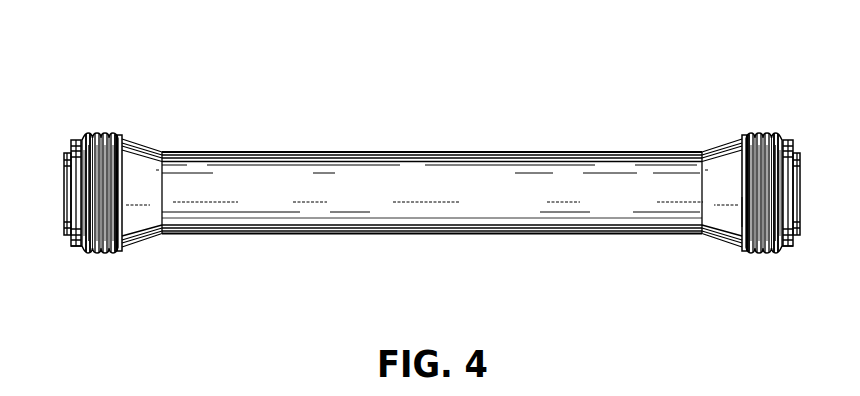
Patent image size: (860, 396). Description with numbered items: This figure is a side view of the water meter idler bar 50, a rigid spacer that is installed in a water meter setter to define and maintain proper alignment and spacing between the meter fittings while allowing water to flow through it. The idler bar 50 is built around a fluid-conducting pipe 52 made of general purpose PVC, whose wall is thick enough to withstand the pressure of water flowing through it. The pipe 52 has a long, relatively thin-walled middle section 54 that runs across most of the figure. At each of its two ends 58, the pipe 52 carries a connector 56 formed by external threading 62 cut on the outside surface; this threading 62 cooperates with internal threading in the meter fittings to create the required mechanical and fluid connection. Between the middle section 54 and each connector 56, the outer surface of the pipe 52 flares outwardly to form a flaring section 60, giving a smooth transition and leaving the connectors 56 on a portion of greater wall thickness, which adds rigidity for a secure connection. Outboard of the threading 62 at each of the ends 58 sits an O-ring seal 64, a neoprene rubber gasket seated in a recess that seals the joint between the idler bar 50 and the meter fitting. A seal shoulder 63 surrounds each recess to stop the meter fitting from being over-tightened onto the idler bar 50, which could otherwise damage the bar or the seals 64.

The water meter idler bar 50 is at (572, 73).
The fluid-conducting pipe 52 is at (457, 172).
The middle section 54 is at (376, 147).
The connectors 56 is at (104, 120).
The ends 58 is at (55, 193).
The flaring sections 60 is at (144, 135).
The external threading 62 is at (90, 138).
The seal shoulders 63 is at (71, 250).
The O-ring seals 64 is at (65, 161).